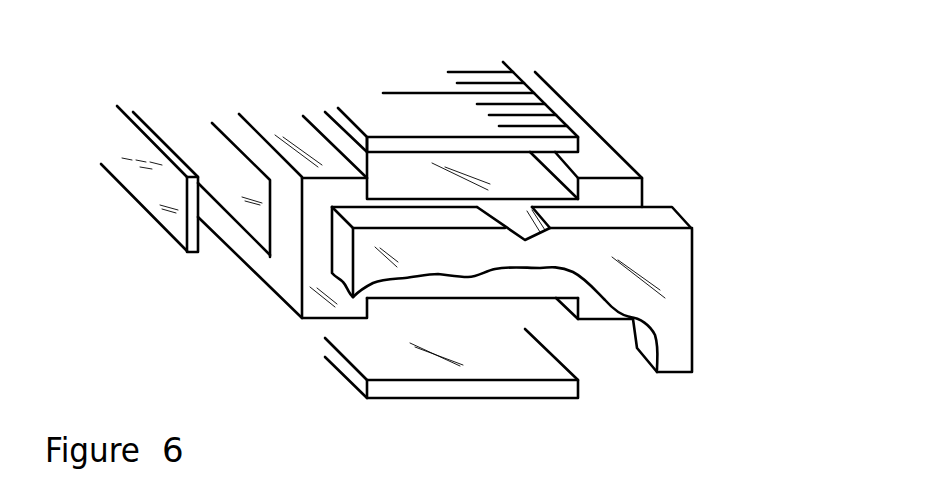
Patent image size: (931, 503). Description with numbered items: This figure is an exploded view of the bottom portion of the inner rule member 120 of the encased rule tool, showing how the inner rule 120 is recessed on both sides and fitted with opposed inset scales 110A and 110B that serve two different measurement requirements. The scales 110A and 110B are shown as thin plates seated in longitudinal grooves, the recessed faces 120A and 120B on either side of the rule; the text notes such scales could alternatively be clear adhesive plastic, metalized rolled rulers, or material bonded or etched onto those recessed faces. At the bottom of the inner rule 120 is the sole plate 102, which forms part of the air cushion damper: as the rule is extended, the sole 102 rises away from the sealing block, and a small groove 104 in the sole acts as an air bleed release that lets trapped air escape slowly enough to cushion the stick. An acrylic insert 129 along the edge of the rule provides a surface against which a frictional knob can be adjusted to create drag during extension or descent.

The sole plate 102 is at (682, 214).
The air bleed release 104 is at (547, 233).
The inset scale 110A is at (492, 82).
The inset scale 110B is at (507, 390).
The inner rule member 120 is at (610, 165).
The upper slot 120A is at (527, 192).
The lower slot 120B is at (395, 299).
The acrylic insert 129 is at (157, 197).